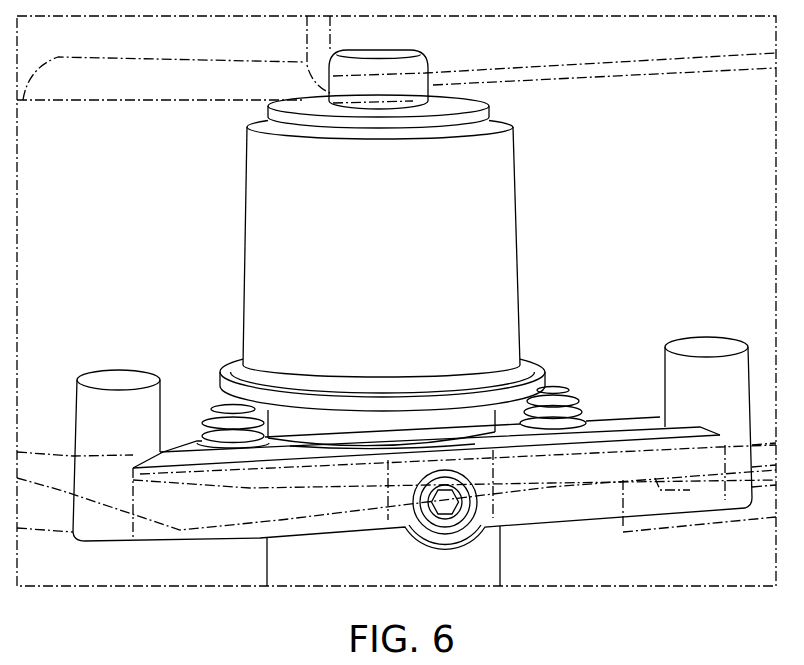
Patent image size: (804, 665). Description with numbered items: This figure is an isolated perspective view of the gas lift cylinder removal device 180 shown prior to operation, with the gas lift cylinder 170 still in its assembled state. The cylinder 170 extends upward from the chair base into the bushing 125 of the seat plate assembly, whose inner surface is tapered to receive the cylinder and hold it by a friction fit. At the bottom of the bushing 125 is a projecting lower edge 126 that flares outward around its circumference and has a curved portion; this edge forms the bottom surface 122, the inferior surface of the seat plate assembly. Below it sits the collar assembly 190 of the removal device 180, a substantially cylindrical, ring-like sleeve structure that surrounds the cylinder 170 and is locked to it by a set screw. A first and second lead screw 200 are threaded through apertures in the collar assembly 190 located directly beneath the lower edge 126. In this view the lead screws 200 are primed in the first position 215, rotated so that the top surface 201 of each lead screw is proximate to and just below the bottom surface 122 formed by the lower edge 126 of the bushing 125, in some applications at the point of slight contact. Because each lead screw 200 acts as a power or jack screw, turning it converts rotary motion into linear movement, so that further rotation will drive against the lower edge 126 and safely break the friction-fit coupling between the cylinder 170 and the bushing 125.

The bushing 125 is at (498, 175).
The bottom surface 122 is at (337, 417).
The lower edge 126 is at (231, 404).
The first position 215 is at (223, 402).
The top surface 201 is at (555, 388).
The lead screw 200 is at (573, 390).
The collar assembly 190 is at (203, 556).
The gas lift cylinder 170 is at (478, 577).
The gas lift cylinder removal device 180 is at (565, 562).